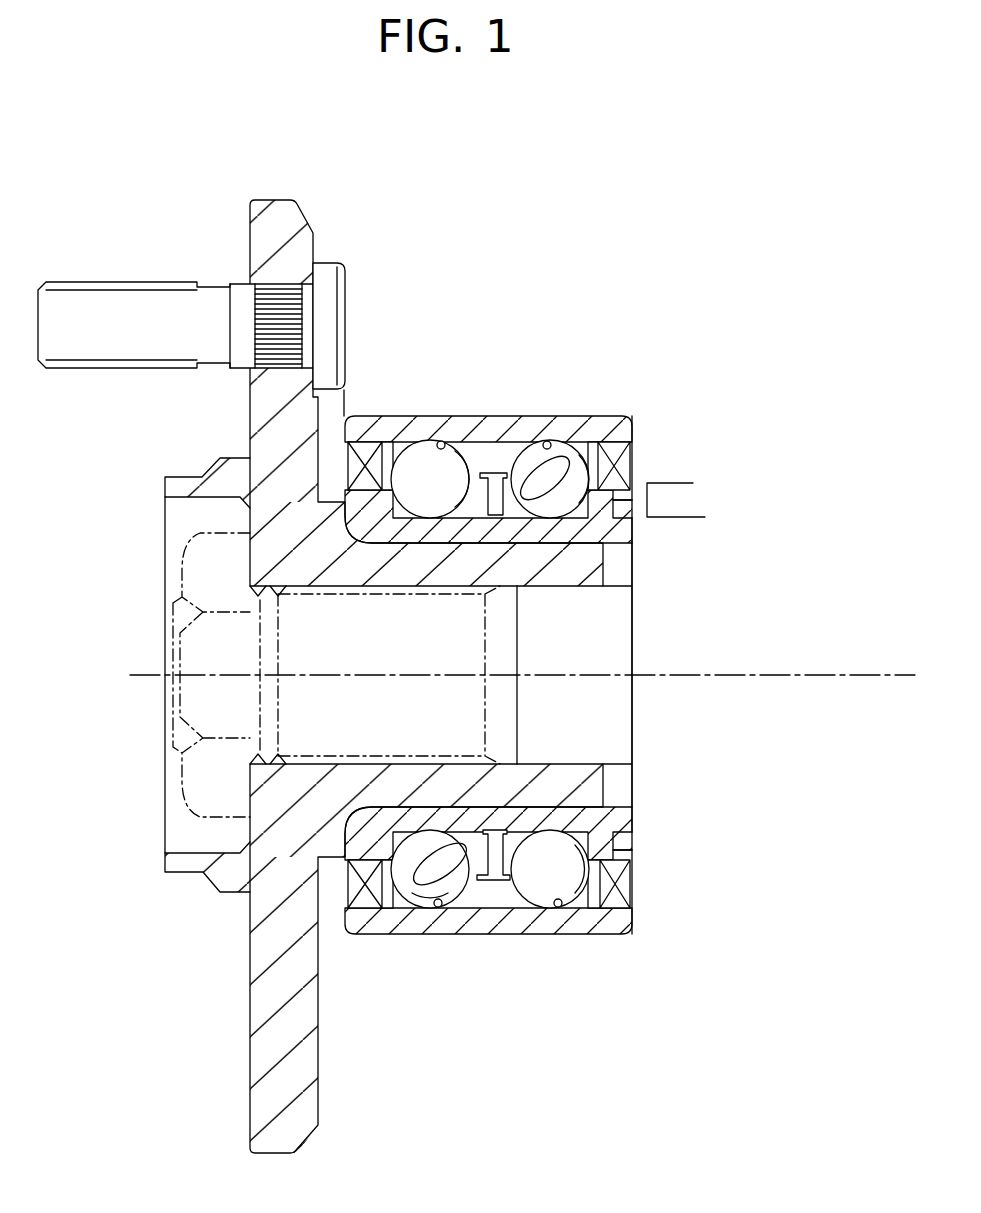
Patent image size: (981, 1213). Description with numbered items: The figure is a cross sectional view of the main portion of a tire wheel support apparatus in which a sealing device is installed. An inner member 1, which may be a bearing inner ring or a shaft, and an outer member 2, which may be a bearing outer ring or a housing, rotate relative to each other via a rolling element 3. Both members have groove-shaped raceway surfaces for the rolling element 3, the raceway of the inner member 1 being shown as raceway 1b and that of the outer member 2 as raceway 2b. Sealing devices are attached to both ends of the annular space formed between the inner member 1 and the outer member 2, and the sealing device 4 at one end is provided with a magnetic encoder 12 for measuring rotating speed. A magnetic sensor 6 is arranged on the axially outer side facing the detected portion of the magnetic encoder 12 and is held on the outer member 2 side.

The inner member 1 is at (395, 597).
The inner raceway 1b is at (438, 520).
The outer member 2 is at (483, 416).
The outer raceway 2b is at (441, 440).
The rolling element 3 is at (415, 470).
The sealing device 4 is at (615, 446).
The magnetic sensor 6 is at (676, 496).
The magnetic encoder 12 is at (624, 510).